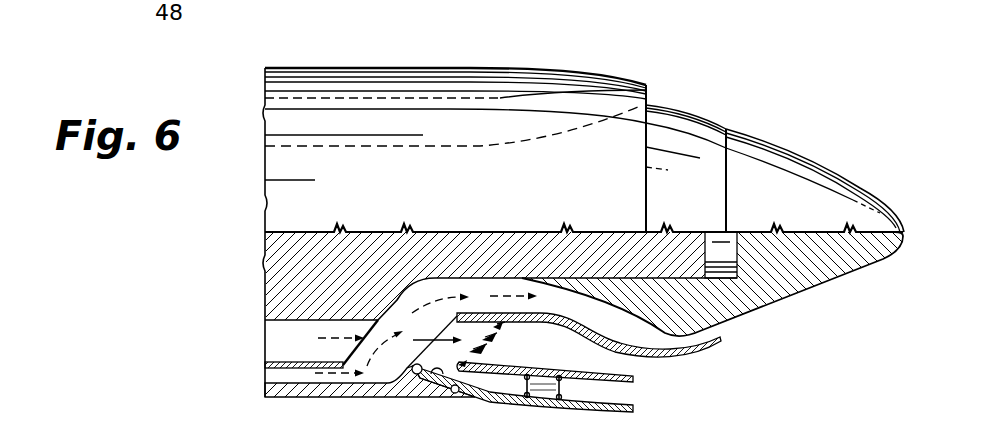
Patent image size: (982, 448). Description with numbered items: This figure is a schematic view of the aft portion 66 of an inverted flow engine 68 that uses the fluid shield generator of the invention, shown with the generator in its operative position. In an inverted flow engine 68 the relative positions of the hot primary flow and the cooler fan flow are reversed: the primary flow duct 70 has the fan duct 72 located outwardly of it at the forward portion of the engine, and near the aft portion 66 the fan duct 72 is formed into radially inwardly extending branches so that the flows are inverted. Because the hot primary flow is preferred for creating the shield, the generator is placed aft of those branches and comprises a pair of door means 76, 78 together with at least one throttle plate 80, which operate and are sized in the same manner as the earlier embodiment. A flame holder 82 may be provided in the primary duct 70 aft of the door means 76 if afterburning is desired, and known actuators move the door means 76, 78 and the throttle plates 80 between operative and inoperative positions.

The aft portion 66 is at (768, 85).
The inverted flow engine 68 is at (597, 52).
The primary flow duct 70 is at (314, 350).
The fan duct 72 is at (270, 371).
The door means 76 is at (419, 393).
The door means 78 is at (496, 400).
The throttle plate 80 is at (539, 395).
The flame holder 82 is at (490, 350).